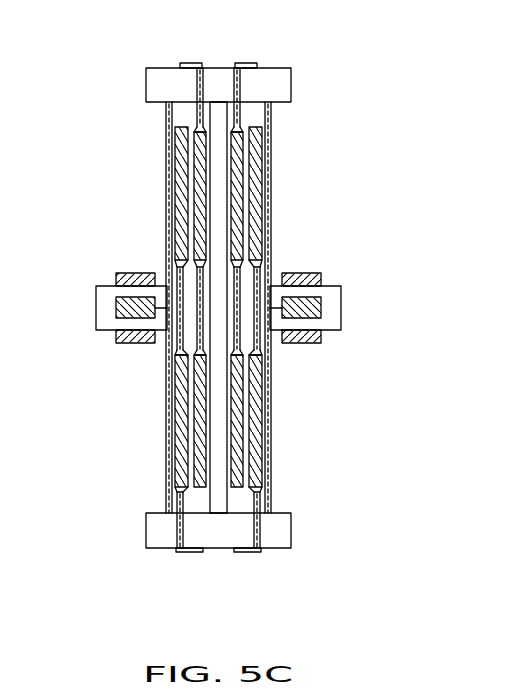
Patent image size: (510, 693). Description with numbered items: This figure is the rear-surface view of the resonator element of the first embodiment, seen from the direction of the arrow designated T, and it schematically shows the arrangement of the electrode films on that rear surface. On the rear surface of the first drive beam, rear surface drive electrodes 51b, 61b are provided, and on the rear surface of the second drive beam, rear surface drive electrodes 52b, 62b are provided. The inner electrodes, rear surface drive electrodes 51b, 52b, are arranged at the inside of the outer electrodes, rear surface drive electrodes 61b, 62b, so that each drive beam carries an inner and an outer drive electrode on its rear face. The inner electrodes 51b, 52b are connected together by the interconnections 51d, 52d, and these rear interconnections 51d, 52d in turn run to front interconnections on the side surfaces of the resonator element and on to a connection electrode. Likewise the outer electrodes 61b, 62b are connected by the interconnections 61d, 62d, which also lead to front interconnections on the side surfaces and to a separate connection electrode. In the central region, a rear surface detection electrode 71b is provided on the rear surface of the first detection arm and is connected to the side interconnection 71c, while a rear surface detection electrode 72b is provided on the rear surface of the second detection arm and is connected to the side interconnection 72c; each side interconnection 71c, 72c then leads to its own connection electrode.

The rear surface drive electrode 51b is at (196, 175).
The rear interconnection 51d is at (196, 112).
The rear surface drive electrode 52b is at (242, 175).
The rear interconnection 52d is at (241, 112).
The rear surface drive electrode 61b is at (176, 147).
The rear interconnection 61d is at (178, 277).
The rear surface drive electrode 62b is at (261, 147).
The rear interconnection 62d is at (259, 277).
The rear surface detection electrode 71b is at (118, 310).
The side interconnection 71c is at (167, 212).
The rear surface detection electrode 72b is at (320, 308).
The side interconnection 72c is at (270, 465).